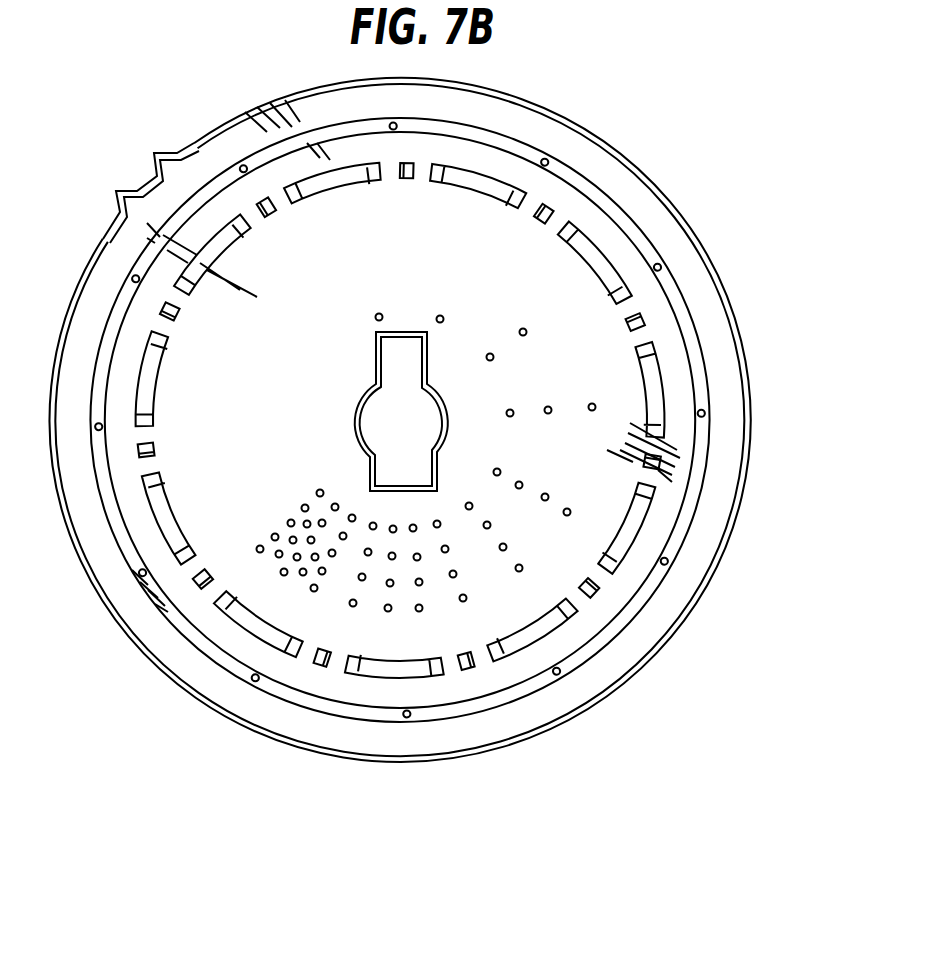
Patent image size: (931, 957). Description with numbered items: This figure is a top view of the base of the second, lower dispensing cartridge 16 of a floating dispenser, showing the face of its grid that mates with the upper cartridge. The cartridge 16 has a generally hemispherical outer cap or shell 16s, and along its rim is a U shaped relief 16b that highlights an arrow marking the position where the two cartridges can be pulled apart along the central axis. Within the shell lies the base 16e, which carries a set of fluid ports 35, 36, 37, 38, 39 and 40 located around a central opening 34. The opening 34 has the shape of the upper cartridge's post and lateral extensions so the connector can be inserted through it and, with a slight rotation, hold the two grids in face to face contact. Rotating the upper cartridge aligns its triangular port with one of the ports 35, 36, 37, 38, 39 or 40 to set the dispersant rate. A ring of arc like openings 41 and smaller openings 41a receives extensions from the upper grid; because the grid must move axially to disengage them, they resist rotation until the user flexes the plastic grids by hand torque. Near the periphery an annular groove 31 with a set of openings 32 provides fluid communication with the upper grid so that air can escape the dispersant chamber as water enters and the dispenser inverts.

The second lower dispensing cartridge 16 is at (633, 152).
The U shaped relief 16b is at (157, 155).
The base 16e is at (672, 236).
The outer cap or shell 16s is at (738, 533).
The annular groove 31 is at (692, 322).
The openings 32 is at (246, 163).
The opening 34 is at (372, 390).
The fluid port 35 is at (437, 316).
The fluid port 36 is at (523, 328).
The fluid port 37 is at (551, 406).
The fluid port 38 is at (490, 522).
The fluid port 39 is at (440, 526).
The fluid port 40 is at (317, 490).
The arc like openings 41 is at (253, 627).
The arc like openings 41a is at (592, 596).